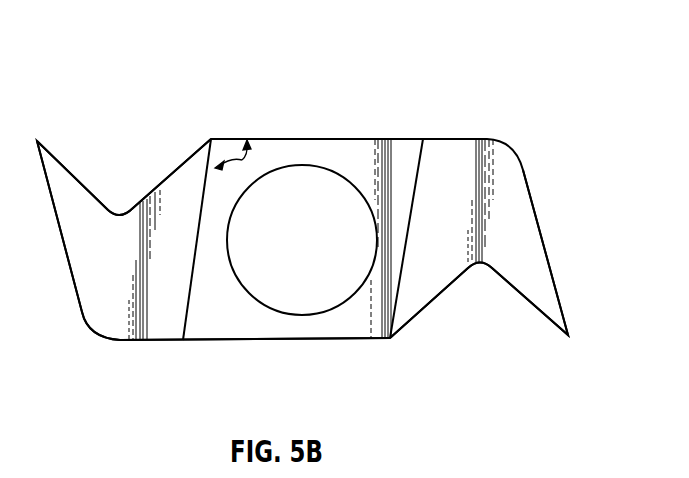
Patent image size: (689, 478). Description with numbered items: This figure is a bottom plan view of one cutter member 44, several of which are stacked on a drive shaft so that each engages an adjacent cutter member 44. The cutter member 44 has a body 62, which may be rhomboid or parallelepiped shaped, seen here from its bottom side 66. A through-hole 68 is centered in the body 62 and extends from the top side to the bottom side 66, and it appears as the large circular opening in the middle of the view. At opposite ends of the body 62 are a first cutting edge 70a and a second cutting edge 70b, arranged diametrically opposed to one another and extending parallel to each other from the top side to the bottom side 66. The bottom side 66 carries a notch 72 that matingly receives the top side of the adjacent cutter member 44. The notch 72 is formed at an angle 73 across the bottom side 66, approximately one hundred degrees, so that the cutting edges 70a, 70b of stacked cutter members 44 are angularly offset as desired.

The cutter member 44 is at (348, 198).
The body 62 is at (212, 139).
The bottom side 66 is at (438, 139).
The through-hole 68 is at (300, 165).
The first cutting edge 70a is at (37, 140).
The second cutting edge 70b is at (568, 335).
The notch 72 is at (203, 340).
The angle 73 is at (242, 160).